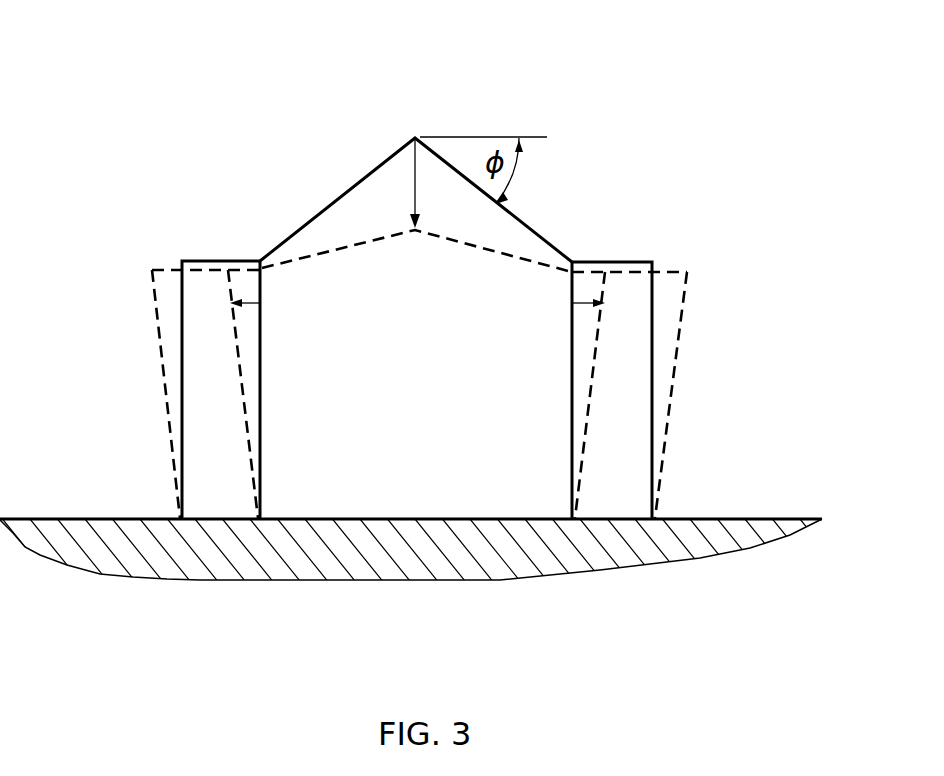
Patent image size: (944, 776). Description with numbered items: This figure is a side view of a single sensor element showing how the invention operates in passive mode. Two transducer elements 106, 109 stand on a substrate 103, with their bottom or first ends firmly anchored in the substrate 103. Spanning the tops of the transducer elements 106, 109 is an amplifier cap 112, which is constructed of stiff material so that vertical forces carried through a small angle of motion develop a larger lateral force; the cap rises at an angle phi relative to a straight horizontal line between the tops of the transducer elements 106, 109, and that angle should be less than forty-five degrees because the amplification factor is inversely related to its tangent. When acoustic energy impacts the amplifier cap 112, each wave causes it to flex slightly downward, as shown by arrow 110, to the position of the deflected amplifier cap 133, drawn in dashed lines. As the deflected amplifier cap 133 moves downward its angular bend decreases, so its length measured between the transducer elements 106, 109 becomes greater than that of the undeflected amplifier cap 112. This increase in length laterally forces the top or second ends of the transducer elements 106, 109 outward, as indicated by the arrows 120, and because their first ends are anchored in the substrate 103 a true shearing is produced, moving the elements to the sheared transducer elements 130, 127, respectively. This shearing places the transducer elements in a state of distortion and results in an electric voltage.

The substrate 103 is at (725, 518).
The transducer element 106 is at (620, 262).
The transducer element 109 is at (247, 260).
The arrow 110 is at (412, 222).
The amplifier cap 112 is at (528, 228).
The arrows 120 is at (250, 304).
The sheared transducer element 127 is at (155, 285).
The sheared transducer element 130 is at (687, 270).
The deflected amplifier cap 133 is at (515, 258).